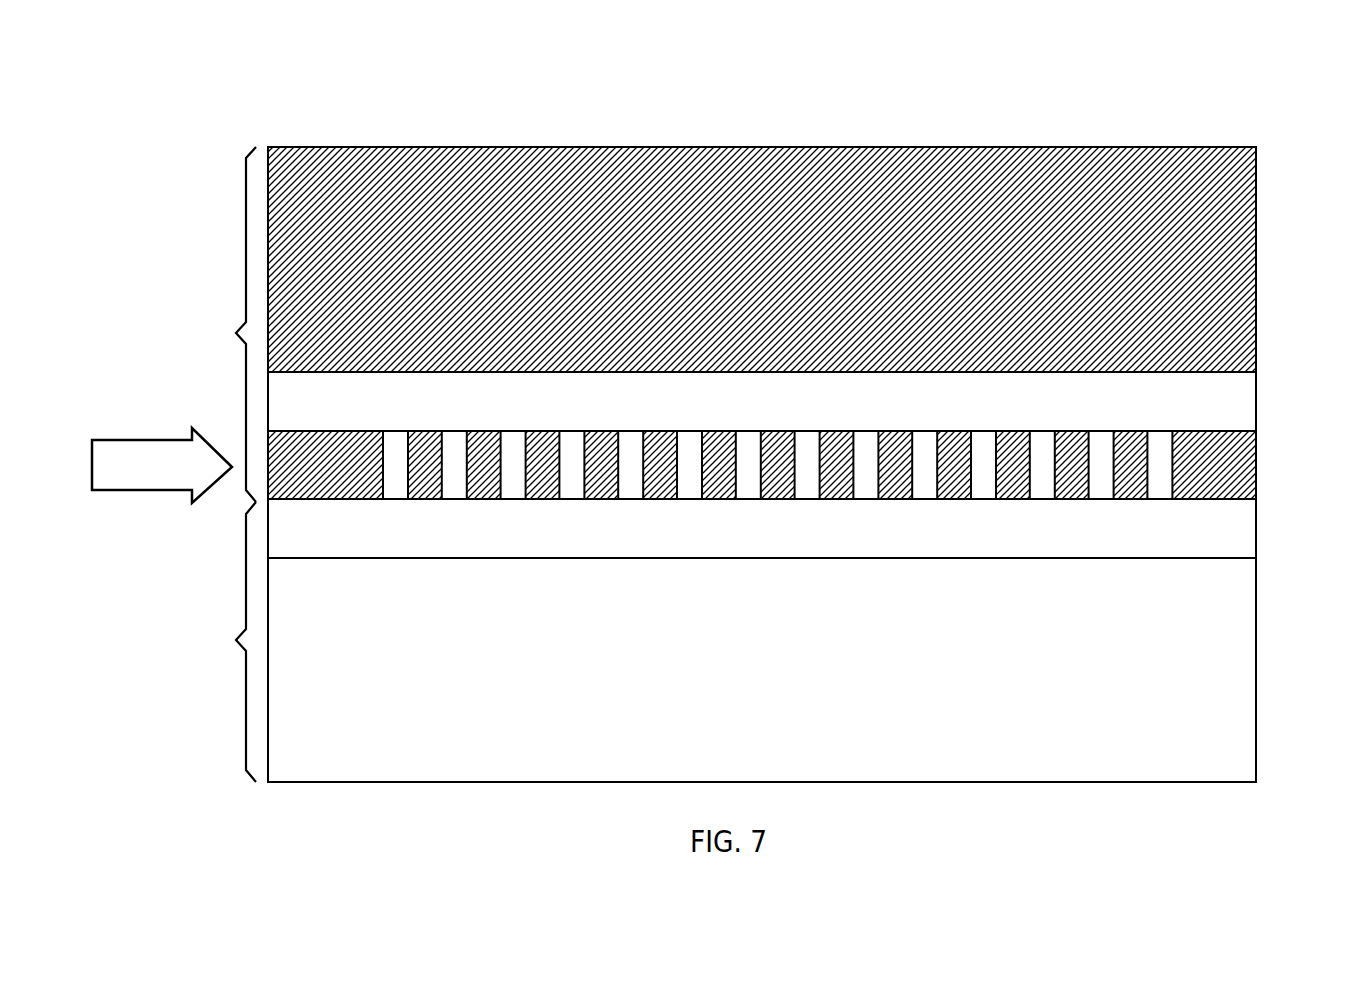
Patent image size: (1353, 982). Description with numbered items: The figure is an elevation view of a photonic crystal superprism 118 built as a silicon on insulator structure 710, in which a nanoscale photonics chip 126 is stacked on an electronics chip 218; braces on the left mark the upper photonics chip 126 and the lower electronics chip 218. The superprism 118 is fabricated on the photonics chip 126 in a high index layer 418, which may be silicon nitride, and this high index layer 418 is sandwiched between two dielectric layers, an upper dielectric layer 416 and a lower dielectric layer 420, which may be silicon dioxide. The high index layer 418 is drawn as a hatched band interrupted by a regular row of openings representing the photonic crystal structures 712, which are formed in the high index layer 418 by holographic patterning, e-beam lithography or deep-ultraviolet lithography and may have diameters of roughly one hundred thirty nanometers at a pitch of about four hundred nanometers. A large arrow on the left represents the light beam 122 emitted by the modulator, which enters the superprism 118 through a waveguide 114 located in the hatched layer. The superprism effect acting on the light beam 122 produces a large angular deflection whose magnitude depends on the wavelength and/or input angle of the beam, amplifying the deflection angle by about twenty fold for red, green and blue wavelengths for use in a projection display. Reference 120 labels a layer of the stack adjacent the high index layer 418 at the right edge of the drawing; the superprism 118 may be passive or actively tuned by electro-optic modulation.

The photonic crystal superprism 118 is at (1220, 102).
The silicon on insulator structure 710 is at (762, 147).
The dielectric layer 416 is at (1258, 407).
The high index layer 418 is at (1258, 465).
The coating layer 120 is at (1258, 488).
The photonic crystal structures 712 is at (573, 500).
The waveguide 114 is at (338, 485).
The dielectric layer 420 is at (1258, 523).
The nanoscale photonics chip 126 is at (236, 333).
The electronics chip 218 is at (236, 640).
The light beam 122 is at (140, 440).